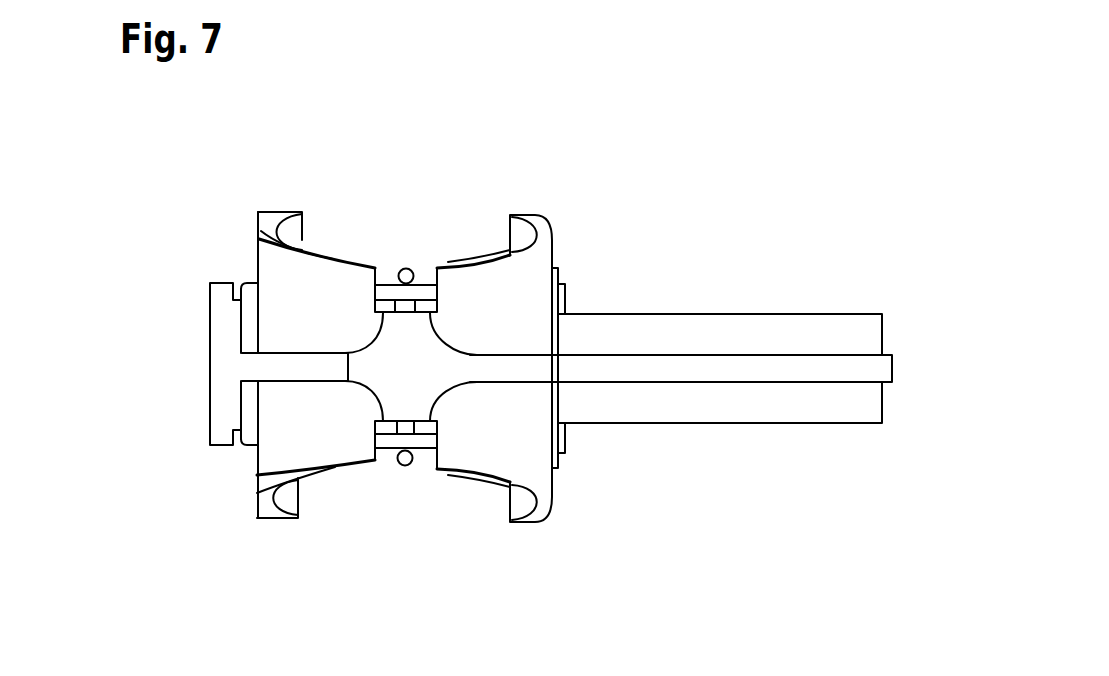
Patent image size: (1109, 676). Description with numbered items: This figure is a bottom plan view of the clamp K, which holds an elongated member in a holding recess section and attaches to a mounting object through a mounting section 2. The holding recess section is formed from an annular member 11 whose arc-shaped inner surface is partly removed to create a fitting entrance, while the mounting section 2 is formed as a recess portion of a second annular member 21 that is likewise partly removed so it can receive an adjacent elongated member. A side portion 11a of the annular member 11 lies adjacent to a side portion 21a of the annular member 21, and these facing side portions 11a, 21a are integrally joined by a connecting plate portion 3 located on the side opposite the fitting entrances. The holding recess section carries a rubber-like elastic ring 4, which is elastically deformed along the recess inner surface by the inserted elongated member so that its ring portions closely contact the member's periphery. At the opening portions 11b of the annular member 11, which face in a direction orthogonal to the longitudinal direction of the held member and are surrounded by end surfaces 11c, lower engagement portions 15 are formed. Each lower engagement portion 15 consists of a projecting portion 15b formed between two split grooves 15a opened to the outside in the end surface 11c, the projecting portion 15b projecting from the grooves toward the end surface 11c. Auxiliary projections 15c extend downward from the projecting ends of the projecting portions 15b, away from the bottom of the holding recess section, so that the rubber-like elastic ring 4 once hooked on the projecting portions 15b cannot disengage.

The mounting section 2 is at (723, 416).
The annular member 21 is at (780, 412).
The side portion 21a is at (562, 395).
The connecting plate portion 3 is at (615, 370).
The rubber-like elastic ring 4 is at (380, 437).
The annular member 11 is at (280, 455).
The side portion 11a is at (553, 255).
The opening portions 11b is at (432, 232).
The end surfaces 11c is at (260, 210).
The lower engagement portions 15 is at (366, 368).
The split grooves 15a is at (380, 281).
The projecting portion 15b is at (400, 306).
The auxiliary projections 15c is at (407, 268).
The clamp K is at (623, 268).